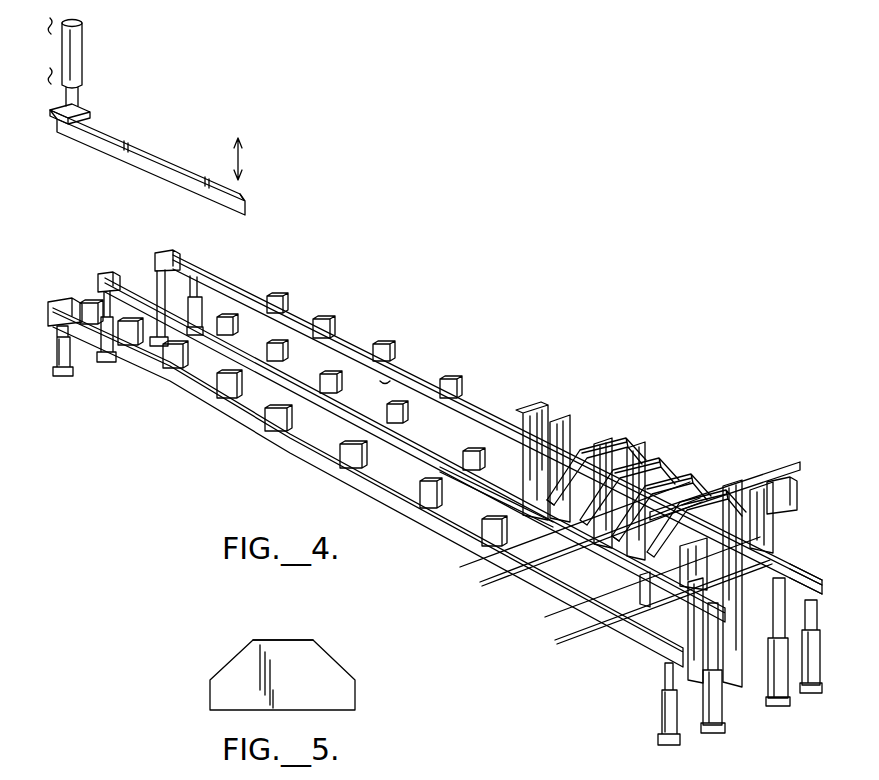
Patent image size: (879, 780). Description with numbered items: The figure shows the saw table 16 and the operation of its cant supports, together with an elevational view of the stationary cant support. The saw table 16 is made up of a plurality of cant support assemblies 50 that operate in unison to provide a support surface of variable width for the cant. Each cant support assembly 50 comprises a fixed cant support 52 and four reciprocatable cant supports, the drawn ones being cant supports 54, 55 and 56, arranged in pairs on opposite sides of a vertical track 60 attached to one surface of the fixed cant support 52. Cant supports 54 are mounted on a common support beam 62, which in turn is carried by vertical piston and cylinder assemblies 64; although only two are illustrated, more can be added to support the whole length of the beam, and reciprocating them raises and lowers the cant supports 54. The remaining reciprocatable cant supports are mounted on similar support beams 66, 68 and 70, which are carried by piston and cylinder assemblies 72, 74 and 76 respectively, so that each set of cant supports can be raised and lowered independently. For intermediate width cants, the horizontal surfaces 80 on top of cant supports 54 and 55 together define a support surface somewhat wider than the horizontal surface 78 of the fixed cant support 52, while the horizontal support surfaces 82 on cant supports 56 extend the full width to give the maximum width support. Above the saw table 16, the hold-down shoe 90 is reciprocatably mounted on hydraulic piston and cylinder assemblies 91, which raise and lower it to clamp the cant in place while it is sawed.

In FIG. 4, the saw table 16 is at (747, 359).
In FIG. 4, the cant support assembly 50 is at (669, 417).
In FIG. 4, the fixed cant support 52 is at (602, 438).
In FIG. 5, the fixed cant support 52 is at (320, 664).
In FIG. 4, the reciprocatable cant support 54 is at (530, 574).
In FIG. 4, the reciprocatable cant support 55 is at (797, 494).
In FIG. 4, the reciprocatable cant support 56 is at (488, 557).
In FIG. 4, the vertical track 60 is at (540, 404).
In FIG. 4, the support beam 62 is at (253, 347).
In FIG. 4, the piston and cylinder assembly 64 is at (725, 708).
In FIG. 4, the support beam 66 is at (345, 325).
In FIG. 4, the support beam 68 is at (245, 404).
In FIG. 4, the support beam 70 is at (388, 378).
In FIG. 4, the piston and cylinder assembly 72 is at (783, 705).
In FIG. 4, the piston and cylinder assembly 74 is at (73, 356).
In FIG. 4, the piston and cylinder assembly 76 is at (805, 668).
In FIG. 4, the horizontal surface 78 is at (601, 423).
In FIG. 5, the horizontal surface 78 is at (277, 631).
In FIG. 4, the horizontal surface 80 is at (722, 482).
In FIG. 4, the horizontal support surface 82 is at (521, 493).
In FIG. 4, the hold-down shoe 90 is at (128, 141).
In FIG. 4, the hydraulic piston and cylinder assembly 91 is at (83, 58).